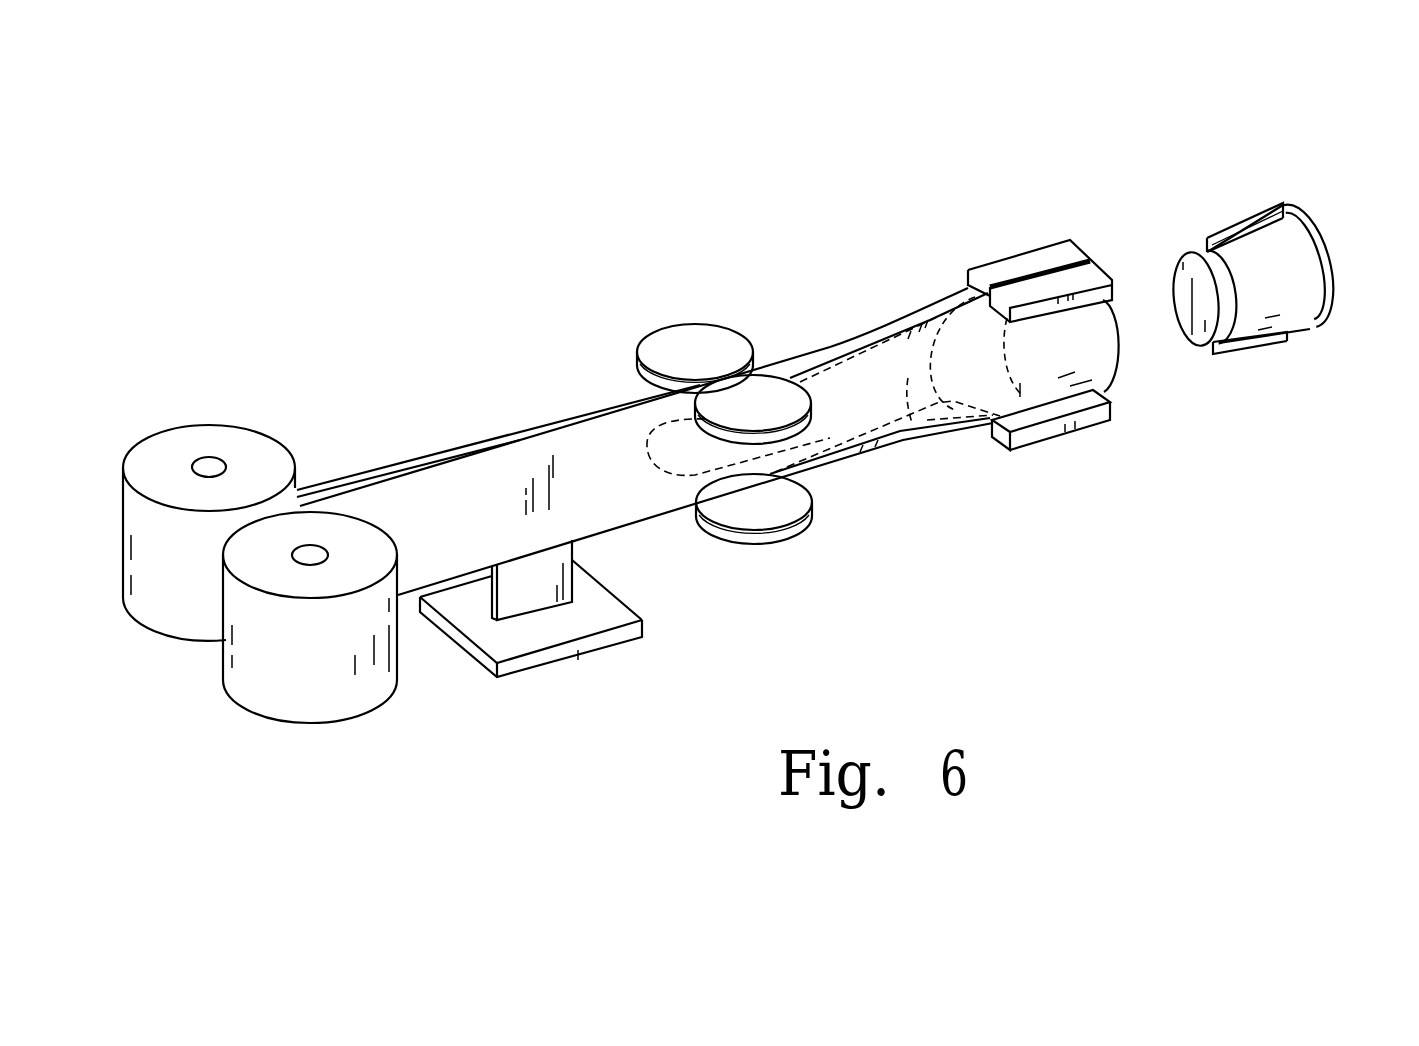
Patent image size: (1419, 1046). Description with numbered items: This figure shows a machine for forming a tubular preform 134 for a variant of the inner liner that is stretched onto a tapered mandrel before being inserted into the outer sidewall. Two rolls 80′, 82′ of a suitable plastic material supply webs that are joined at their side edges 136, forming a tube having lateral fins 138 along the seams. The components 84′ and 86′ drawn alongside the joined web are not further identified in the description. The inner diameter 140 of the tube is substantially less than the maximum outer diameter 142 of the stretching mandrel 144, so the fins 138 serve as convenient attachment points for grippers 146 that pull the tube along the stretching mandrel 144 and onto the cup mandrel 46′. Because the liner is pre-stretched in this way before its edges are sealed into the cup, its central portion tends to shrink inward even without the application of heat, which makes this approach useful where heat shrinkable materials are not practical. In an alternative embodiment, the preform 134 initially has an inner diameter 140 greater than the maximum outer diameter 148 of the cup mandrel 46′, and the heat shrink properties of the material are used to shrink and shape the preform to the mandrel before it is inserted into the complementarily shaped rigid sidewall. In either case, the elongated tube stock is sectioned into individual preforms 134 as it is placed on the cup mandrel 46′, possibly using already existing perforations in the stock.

The roll 80′ is at (188, 478).
The roll 82′ is at (318, 655).
The side edges 136 is at (318, 482).
The first guide roller 84′ is at (665, 327).
The inner diameter 140 is at (827, 395).
The third guide roller 86′ is at (770, 546).
The lateral fins 138 is at (866, 336).
The tubular preform 134 is at (1097, 366).
The maximum outer diameter 142 is at (1118, 332).
The grippers 146 is at (1000, 205).
The stretching mandrel 144 is at (967, 430).
The cup mandrel 46′ is at (1330, 285).
The maximum outer diameter 148 is at (1306, 212).